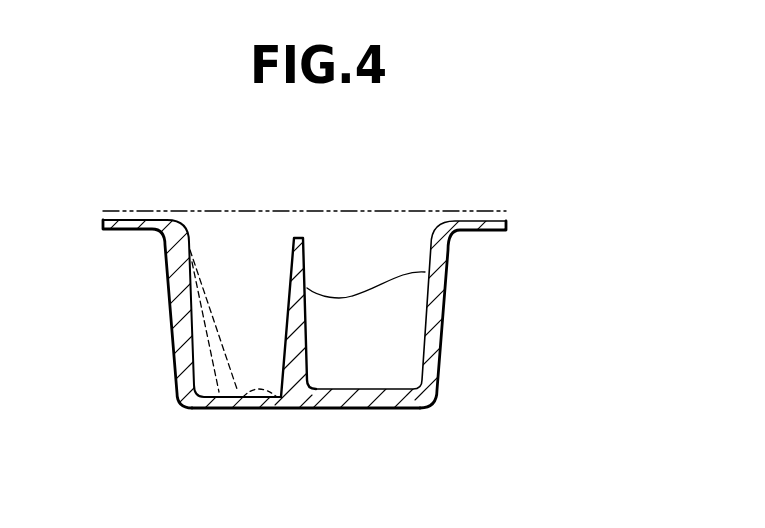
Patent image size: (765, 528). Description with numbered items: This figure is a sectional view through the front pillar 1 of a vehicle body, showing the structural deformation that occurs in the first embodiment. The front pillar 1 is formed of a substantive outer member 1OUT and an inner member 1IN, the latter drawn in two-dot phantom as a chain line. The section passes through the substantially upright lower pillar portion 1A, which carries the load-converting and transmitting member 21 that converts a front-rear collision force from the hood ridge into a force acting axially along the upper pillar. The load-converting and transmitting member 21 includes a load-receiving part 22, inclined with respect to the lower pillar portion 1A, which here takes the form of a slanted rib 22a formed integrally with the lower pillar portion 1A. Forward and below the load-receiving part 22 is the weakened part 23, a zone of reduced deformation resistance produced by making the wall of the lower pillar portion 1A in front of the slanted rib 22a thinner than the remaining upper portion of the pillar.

The front pillar 1 is at (318, 311).
The inner member 1IN is at (398, 212).
The outer member 1OUT is at (431, 413).
The lower pillar portion 1A is at (347, 410).
The load-converting and transmitting member 21 is at (283, 308).
The load-receiving part 22 is at (313, 332).
The slanted rib 22a is at (425, 272).
The weakened part 23 is at (217, 410).